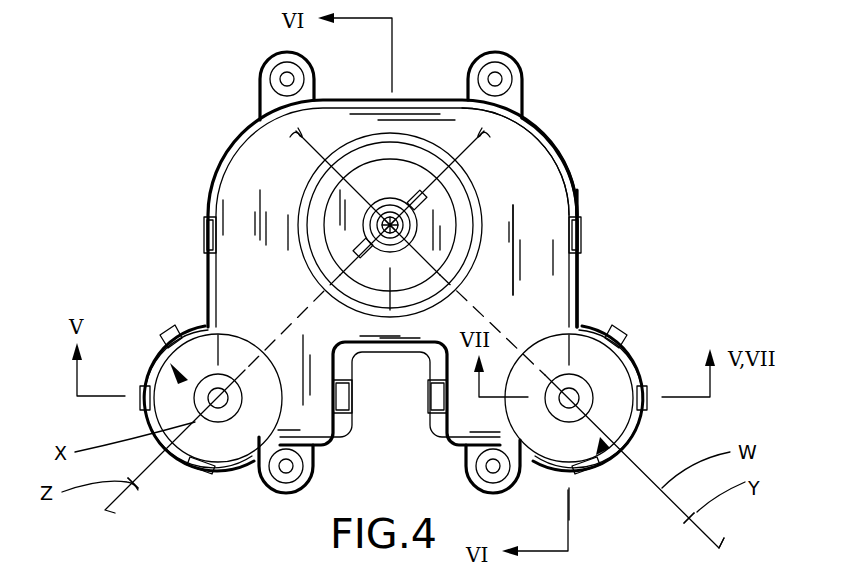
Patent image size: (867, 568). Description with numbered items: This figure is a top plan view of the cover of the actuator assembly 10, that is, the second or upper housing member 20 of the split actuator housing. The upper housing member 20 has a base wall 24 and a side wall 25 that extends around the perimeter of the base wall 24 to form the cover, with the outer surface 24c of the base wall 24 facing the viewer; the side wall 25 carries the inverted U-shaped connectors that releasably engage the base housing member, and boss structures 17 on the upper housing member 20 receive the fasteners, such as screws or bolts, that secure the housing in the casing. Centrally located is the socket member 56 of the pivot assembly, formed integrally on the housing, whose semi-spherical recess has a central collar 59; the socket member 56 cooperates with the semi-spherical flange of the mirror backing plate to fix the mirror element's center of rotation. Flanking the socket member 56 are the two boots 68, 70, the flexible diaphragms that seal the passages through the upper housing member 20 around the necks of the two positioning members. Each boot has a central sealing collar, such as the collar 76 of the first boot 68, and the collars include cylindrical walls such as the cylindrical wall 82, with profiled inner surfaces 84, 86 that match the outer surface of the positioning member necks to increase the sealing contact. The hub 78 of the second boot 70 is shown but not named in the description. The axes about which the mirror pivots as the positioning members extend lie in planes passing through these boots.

The actuator assembly 10 is at (610, 186).
The boss structures 17 is at (506, 55).
The upper housing member 20 is at (584, 277).
The base wall 24 is at (530, 184).
The outer surface 24c is at (520, 172).
The side wall 25 is at (545, 128).
The socket member 56 is at (307, 192).
The central collar 59 is at (391, 205).
The boot 68 is at (165, 355).
The boot 70 is at (595, 472).
The central sealing collar 76 is at (223, 378).
The second knob hub 78 is at (583, 385).
The cylindrical wall 82 is at (696, 540).
The profiled inner surface 84 is at (147, 523).
The profiled inner surface 86 is at (752, 553).